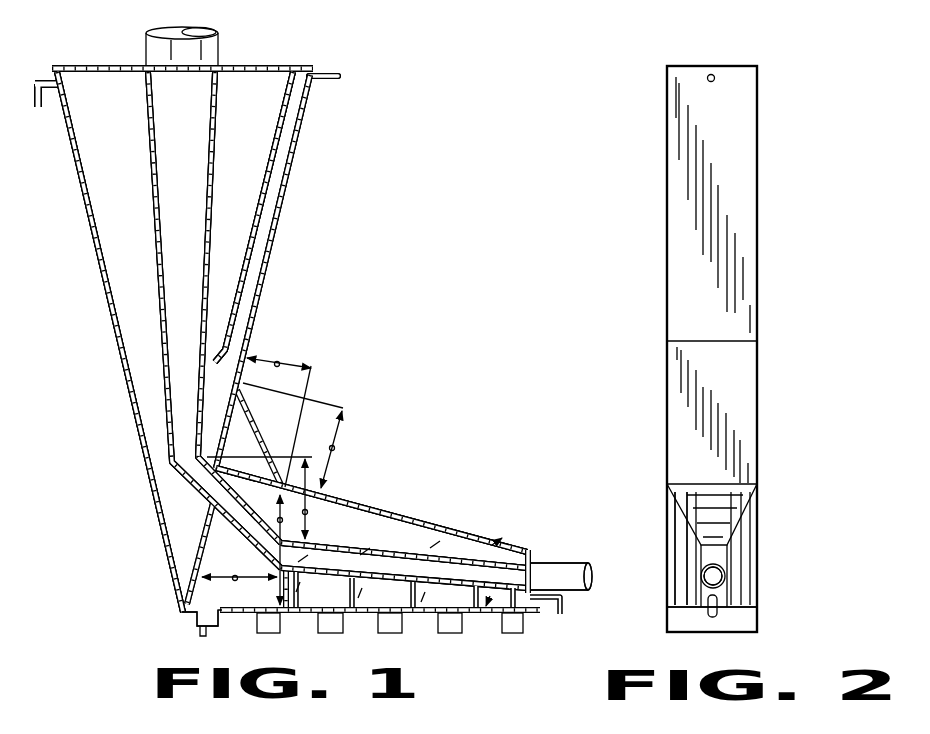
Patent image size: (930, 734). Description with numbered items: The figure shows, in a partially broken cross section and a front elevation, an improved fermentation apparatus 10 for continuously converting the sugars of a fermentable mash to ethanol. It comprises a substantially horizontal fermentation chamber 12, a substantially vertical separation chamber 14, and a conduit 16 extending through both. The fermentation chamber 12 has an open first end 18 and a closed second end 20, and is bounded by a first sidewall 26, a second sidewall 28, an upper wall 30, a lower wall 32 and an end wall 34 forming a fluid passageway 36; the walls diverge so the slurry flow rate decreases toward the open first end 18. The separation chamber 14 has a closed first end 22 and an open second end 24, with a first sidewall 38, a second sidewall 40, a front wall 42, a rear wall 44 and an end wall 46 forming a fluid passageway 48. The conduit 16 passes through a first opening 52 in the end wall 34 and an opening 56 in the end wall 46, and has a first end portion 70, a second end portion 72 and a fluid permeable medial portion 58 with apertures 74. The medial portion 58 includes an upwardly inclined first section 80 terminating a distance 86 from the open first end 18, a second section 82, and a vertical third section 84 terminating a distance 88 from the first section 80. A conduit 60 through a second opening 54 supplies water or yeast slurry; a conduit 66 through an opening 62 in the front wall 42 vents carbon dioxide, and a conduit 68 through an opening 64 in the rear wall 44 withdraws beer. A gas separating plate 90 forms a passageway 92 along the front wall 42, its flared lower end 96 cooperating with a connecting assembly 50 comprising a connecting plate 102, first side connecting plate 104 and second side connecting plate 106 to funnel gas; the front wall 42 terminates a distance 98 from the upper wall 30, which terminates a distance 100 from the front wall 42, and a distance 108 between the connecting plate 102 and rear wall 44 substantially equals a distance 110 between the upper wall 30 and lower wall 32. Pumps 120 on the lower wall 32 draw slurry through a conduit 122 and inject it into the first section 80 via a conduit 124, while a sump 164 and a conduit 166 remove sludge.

In FIG. 1, the fermentation apparatus 10 is at (402, 32).
In FIG. 2, the fermentation apparatus 10 is at (775, 55).
In FIG. 1, the fermentation chamber 12 is at (472, 522).
In FIG. 1, the separation chamber 14 is at (278, 257).
In FIG. 2, the separation chamber 14 is at (760, 240).
In FIG. 1, the conduit 16 is at (560, 563).
In FIG. 2, the conduit 16 is at (722, 572).
In FIG. 1, the open first end 18 is at (190, 598).
In FIG. 1, the closed second end 20 is at (545, 545).
In FIG. 2, the closed second end 20 is at (718, 566).
In FIG. 1, the closed first end 22 is at (303, 66).
In FIG. 2, the closed first end 22 is at (697, 66).
In FIG. 1, the open second end 24 is at (420, 582).
In FIG. 2, the first sidewall 26 is at (677, 590).
In FIG. 1, the second sidewall 28 is at (364, 540).
In FIG. 2, the second sidewall 28 is at (740, 590).
In FIG. 1, the upper wall 30 is at (397, 549).
In FIG. 2, the upper wall 30 is at (757, 484).
In FIG. 1, the lower wall 32 is at (226, 614).
In FIG. 2, the lower wall 32 is at (757, 612).
In FIG. 1, the end wall 34 is at (512, 553).
In FIG. 1, the fluid passageway 36 is at (323, 512).
In FIG. 2, the first sidewall 38 is at (667, 152).
In FIG. 1, the second sidewall 40 is at (106, 179).
In FIG. 2, the second sidewall 40 is at (757, 170).
In FIG. 1, the front wall 42 is at (290, 182).
In FIG. 2, the front wall 42 is at (715, 143).
In FIG. 1, the rear wall 44 is at (97, 238).
In FIG. 1, the end wall 46 is at (276, 66).
In FIG. 2, the end wall 46 is at (680, 66).
In FIG. 1, the fluid passageway 48 is at (285, 133).
In FIG. 1, the connecting assembly 50 is at (264, 411).
In FIG. 2, the connecting assembly 50 is at (760, 386).
In FIG. 1, the first opening 52 is at (542, 553).
In FIG. 1, the second opening 54 is at (538, 607).
In FIG. 1, the opening 56 is at (214, 54).
In FIG. 1, the medial portion 58 is at (236, 505).
In FIG. 1, the conduit 60 is at (560, 603).
In FIG. 2, the conduit 60 is at (710, 612).
In FIG. 1, the opening 62 is at (322, 80).
In FIG. 1, the opening 64 is at (60, 87).
In FIG. 1, the conduit 66 is at (338, 76).
In FIG. 2, the conduit 66 is at (715, 78).
In FIG. 1, the conduit 68 is at (40, 100).
In FIG. 1, the first end portion 70 is at (576, 581).
In FIG. 1, the second end portion 72 is at (165, 87).
In FIG. 1, the apertures 74 is at (160, 307).
In FIG. 1, the first section 80 is at (408, 526).
In FIG. 1, the second section 82 is at (236, 536).
In FIG. 1, the third section 84 is at (218, 192).
In FIG. 1, the distance 86 is at (236, 582).
In FIG. 1, the distance 88 is at (322, 509).
In FIG. 1, the gas separating plate 90 is at (270, 222).
In FIG. 1, the passageway 92 is at (252, 274).
In FIG. 1, the lower end 96 is at (224, 353).
In FIG. 1, the distance 98 is at (308, 512).
In FIG. 1, the distance 100 is at (280, 362).
In FIG. 1, the connecting plate 102 is at (267, 437).
In FIG. 2, the connecting plate 102 is at (714, 383).
In FIG. 2, the first side connecting plate 104 is at (667, 390).
In FIG. 1, the second side connecting plate 106 is at (200, 456).
In FIG. 2, the second side connecting plate 106 is at (757, 406).
In FIG. 1, the distance 108 is at (184, 435).
In FIG. 1, the distance 110 is at (282, 523).
In FIG. 1, the pumps 120 is at (392, 620).
In FIG. 1, the conduit 122 is at (356, 612).
In FIG. 1, the conduit 124 is at (487, 620).
In FIG. 1, the sump 164 is at (195, 622).
In FIG. 1, the conduit 166 is at (201, 633).